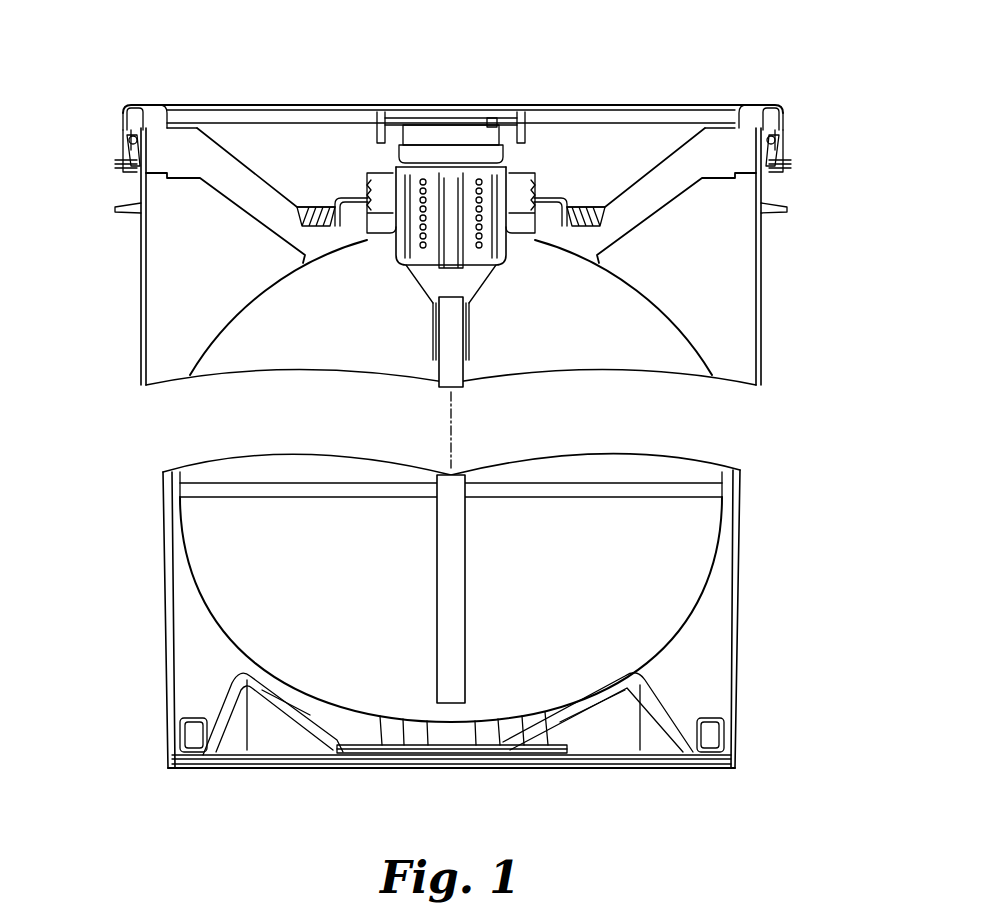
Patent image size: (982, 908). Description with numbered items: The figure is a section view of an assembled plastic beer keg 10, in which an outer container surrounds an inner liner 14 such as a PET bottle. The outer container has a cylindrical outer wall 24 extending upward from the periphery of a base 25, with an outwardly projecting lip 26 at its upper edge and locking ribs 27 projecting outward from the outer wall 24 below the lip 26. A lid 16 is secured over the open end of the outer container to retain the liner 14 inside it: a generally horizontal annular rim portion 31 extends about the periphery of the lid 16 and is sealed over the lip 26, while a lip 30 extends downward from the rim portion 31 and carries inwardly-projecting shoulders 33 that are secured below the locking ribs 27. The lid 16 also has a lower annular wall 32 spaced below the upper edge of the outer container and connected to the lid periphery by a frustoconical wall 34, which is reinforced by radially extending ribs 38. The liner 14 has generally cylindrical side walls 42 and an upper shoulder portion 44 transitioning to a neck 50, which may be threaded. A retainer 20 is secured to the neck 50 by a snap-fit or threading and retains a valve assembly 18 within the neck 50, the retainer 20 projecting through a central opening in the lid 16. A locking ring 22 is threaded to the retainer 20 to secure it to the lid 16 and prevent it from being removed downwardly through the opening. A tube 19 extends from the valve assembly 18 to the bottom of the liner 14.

The plastic beer keg 10 is at (752, 58).
The inner liner 14 is at (740, 350).
The lid 16 is at (197, 110).
The valve assembly 18 is at (382, 258).
The tube 19 is at (465, 380).
The retainer 20 is at (530, 125).
The locking ring 22 is at (562, 192).
The cylindrical outer wall 24 is at (765, 265).
The base 25 is at (330, 770).
The lip 26 is at (785, 125).
The locking ribs 27 is at (123, 140).
The lip 30 is at (788, 180).
The annular rim portion 31 is at (148, 105).
The lower annular wall 32 is at (321, 207).
The shoulders 33 is at (755, 118).
The frustoconical wall 34 is at (247, 170).
The radially extending ribs 38 is at (207, 195).
The cylindrical side walls 42 is at (735, 476).
The upper shoulder portion 44 is at (640, 278).
The neck 50 is at (388, 165).